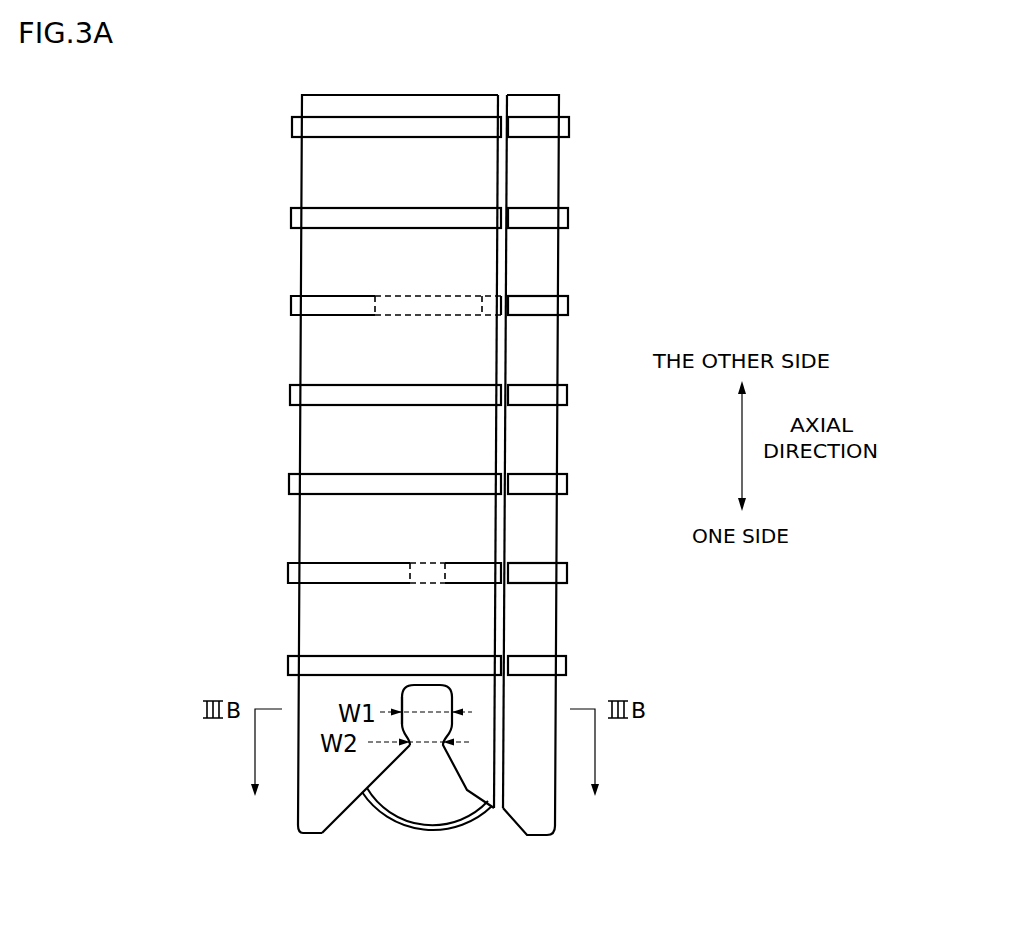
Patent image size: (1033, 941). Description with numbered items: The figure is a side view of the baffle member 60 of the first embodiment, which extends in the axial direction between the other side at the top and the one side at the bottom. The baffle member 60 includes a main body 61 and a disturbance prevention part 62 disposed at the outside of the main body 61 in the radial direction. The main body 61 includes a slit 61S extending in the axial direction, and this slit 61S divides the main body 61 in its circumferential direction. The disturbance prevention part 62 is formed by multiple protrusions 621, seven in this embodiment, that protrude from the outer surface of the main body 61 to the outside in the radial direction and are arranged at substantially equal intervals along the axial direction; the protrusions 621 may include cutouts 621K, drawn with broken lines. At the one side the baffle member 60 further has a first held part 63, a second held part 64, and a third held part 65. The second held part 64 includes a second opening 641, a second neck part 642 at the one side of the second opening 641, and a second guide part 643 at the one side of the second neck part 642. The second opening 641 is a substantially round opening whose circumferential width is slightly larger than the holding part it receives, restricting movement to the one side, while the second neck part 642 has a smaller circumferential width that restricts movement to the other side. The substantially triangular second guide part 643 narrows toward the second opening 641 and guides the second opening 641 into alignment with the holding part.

The baffle member 60 is at (256, 126).
The main body 61 is at (560, 187).
The slit 61S is at (497, 612).
The disturbance prevention part 62 is at (300, 282).
The protrusions 621 is at (570, 127).
The cutouts 621K is at (388, 315).
The first held part 63 is at (342, 839).
The second held part 64 is at (348, 809).
The second opening 641 is at (412, 720).
The second neck part 642 is at (412, 752).
The second guide part 643 is at (350, 817).
The third held part 65 is at (514, 842).